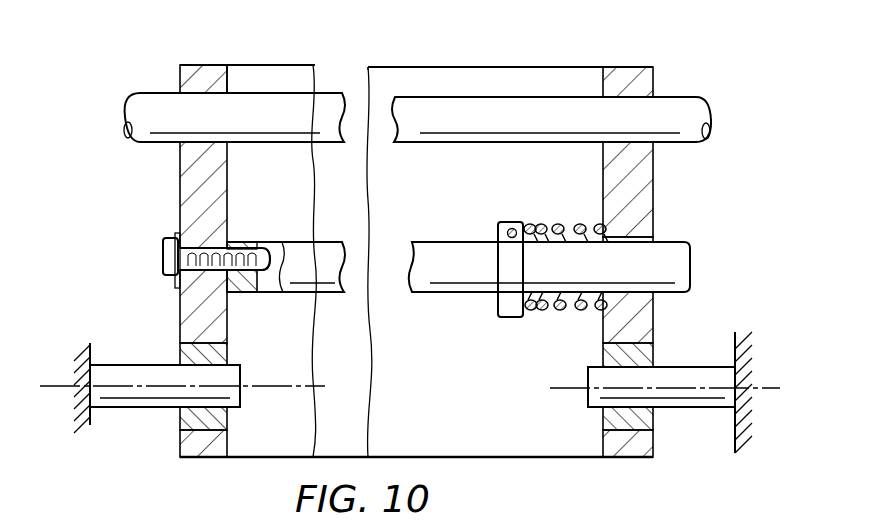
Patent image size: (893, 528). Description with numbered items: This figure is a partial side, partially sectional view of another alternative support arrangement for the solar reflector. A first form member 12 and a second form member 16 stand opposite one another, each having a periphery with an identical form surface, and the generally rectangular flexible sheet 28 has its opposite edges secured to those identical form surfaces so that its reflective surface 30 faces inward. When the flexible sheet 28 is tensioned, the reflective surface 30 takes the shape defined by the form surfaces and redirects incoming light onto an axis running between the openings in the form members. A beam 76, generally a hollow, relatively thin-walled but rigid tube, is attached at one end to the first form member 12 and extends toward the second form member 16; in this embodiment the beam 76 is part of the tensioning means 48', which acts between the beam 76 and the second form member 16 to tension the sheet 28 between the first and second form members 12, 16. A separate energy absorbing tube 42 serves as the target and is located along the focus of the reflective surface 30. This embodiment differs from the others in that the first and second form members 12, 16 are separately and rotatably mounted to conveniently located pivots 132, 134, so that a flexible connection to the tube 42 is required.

The first form member 12 is at (180, 173).
The second form member 16 is at (635, 190).
The flexible sheet 28 is at (416, 67).
The reflective surface 30 is at (283, 78).
The energy absorbing tube 42 is at (495, 107).
The tensioning means 48' is at (562, 233).
The beam 76 is at (447, 243).
The pivot 132 is at (247, 386).
The pivot 134 is at (580, 384).